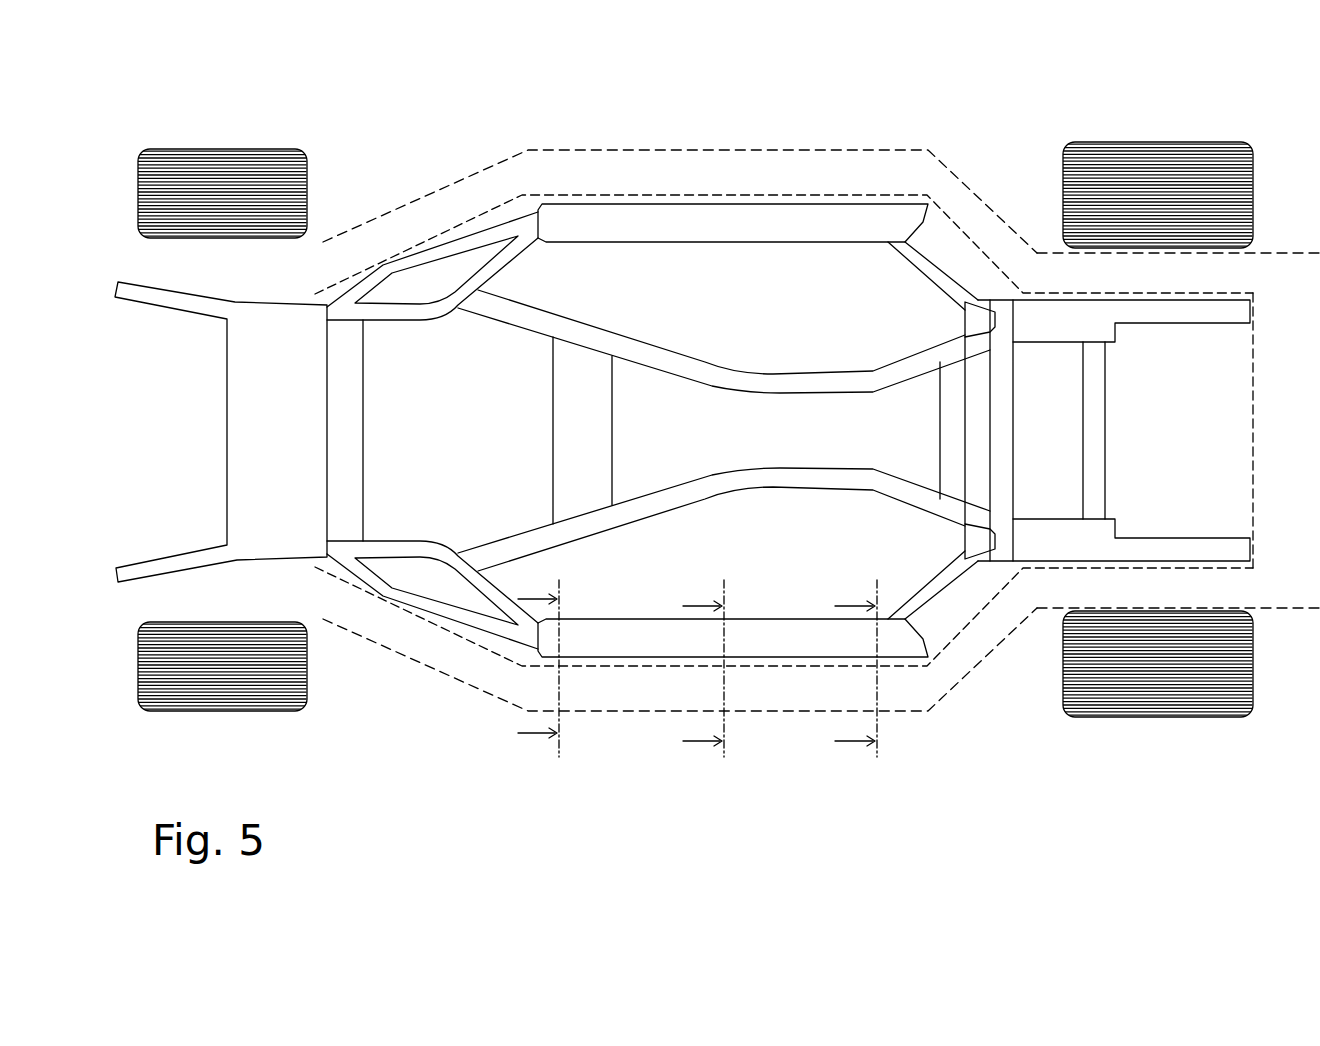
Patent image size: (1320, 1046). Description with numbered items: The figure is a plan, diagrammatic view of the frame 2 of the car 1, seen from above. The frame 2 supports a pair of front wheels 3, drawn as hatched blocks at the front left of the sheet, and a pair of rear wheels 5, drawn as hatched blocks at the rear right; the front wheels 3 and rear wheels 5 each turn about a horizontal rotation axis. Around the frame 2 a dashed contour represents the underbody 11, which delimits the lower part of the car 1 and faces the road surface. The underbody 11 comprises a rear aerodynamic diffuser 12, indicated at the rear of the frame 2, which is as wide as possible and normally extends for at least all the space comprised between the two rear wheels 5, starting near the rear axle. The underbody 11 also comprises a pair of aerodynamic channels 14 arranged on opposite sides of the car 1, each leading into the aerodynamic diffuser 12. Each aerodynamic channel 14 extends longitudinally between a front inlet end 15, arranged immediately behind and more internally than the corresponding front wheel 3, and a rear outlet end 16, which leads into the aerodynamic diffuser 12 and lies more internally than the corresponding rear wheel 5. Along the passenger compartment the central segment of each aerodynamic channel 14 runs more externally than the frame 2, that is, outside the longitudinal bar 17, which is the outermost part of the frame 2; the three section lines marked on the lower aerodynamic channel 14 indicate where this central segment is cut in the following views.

The car 1 is at (1020, 800).
The frame 2 is at (477, 774).
The front wheels 3 is at (218, 190).
The rear wheels 5 is at (1163, 188).
The underbody 11 is at (793, 792).
The aerodynamic diffuser 12 is at (1271, 415).
The aerodynamic channels 14 is at (827, 156).
The inlet end 15 is at (325, 273).
The outlet end 16 is at (1262, 271).
The longitudinal bar 17 is at (683, 220).